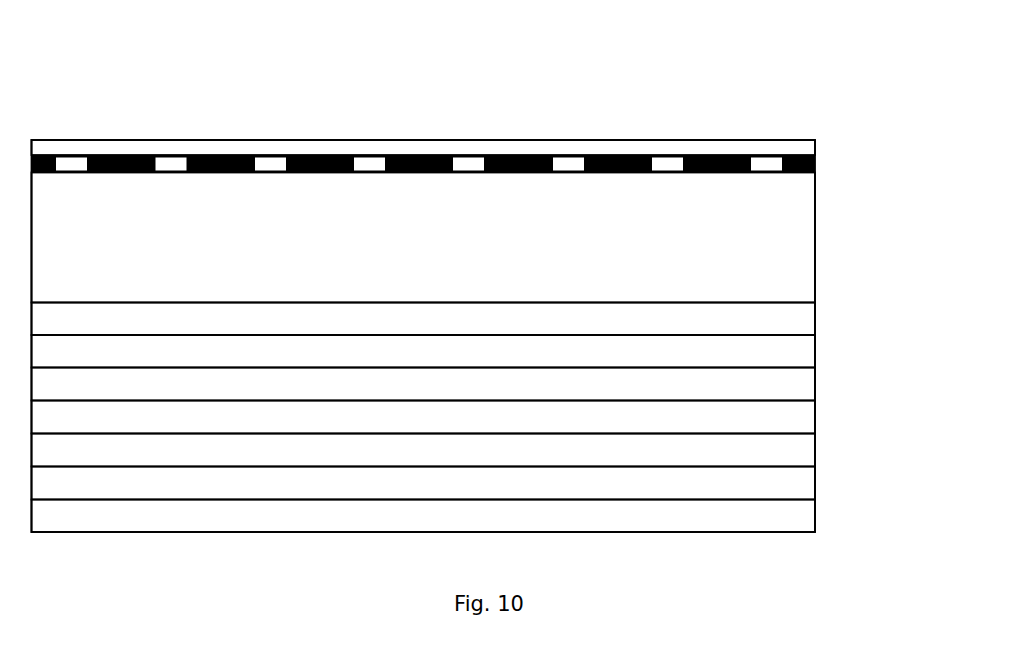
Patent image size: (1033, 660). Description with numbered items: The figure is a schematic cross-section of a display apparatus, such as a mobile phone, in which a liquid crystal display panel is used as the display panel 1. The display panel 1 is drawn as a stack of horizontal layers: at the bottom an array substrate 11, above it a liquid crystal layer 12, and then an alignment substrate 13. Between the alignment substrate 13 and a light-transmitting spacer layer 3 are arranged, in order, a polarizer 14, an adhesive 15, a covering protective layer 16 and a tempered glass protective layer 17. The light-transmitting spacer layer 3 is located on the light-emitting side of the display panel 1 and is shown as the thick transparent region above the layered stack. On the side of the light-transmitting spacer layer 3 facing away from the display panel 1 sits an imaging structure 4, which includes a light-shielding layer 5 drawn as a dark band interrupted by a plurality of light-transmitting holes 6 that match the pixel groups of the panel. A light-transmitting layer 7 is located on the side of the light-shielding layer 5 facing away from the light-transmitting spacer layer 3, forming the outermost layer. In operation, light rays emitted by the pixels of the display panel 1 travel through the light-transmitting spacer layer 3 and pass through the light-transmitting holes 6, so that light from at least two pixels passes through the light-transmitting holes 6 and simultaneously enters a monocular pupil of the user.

The display panel 1 is at (491, 483).
The light-transmitting spacer layer 3 is at (782, 237).
The imaging structure 4 is at (431, 93).
The light-shielding layer 5 is at (720, 157).
The light-transmitting holes 6 is at (765, 163).
The light-transmitting layer 7 is at (797, 153).
The array substrate 11 is at (783, 511).
The liquid crystal layer 12 is at (783, 485).
The alignment substrate 13 is at (783, 452).
The polarizer 14 is at (783, 413).
The adhesive 15 is at (783, 386).
The covering protective layer 16 is at (781, 348).
The tempered glass protective layer 17 is at (783, 321).